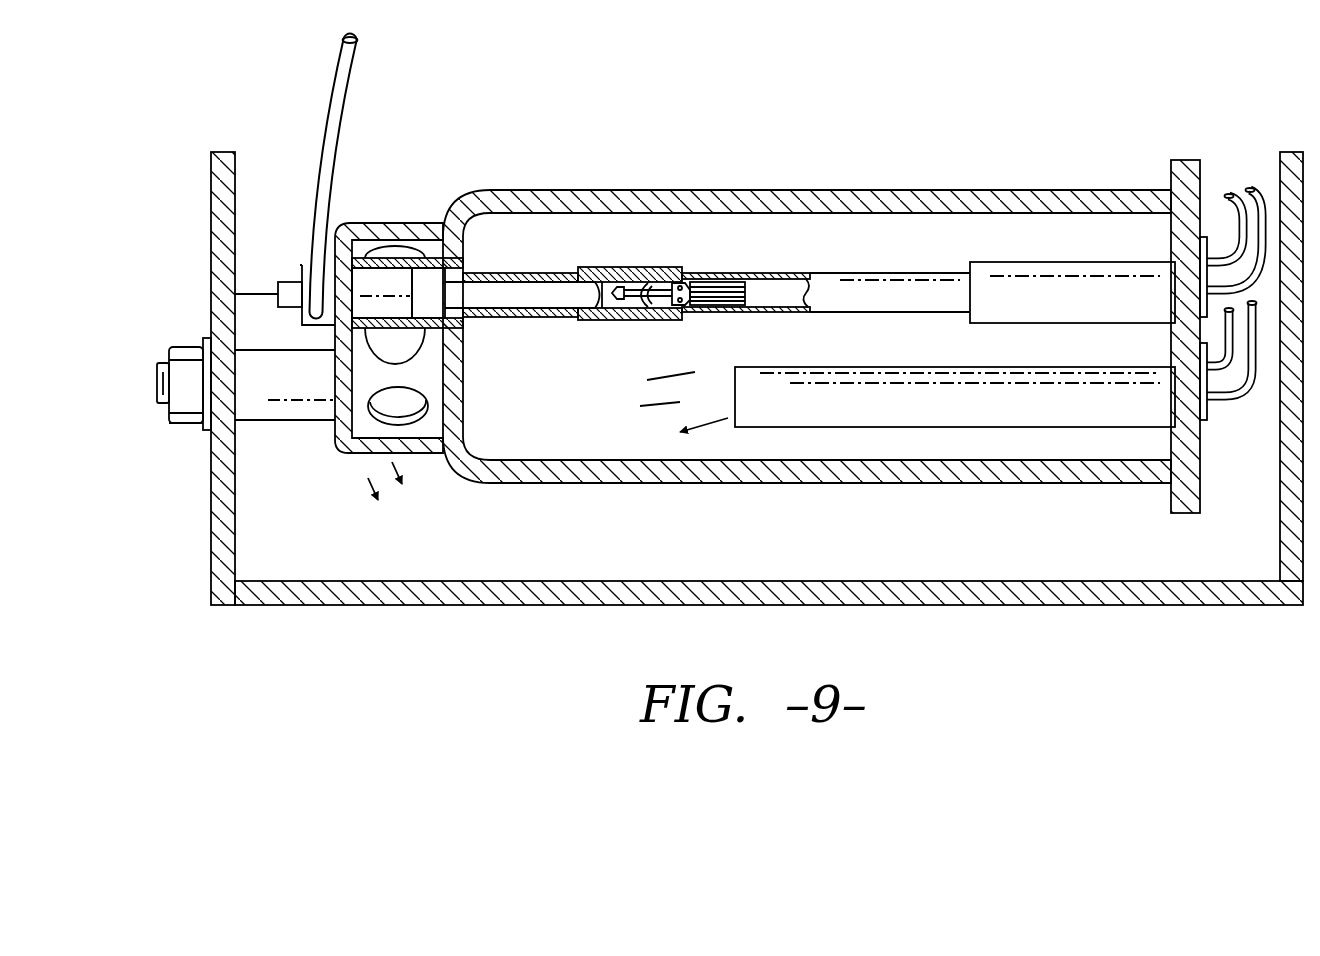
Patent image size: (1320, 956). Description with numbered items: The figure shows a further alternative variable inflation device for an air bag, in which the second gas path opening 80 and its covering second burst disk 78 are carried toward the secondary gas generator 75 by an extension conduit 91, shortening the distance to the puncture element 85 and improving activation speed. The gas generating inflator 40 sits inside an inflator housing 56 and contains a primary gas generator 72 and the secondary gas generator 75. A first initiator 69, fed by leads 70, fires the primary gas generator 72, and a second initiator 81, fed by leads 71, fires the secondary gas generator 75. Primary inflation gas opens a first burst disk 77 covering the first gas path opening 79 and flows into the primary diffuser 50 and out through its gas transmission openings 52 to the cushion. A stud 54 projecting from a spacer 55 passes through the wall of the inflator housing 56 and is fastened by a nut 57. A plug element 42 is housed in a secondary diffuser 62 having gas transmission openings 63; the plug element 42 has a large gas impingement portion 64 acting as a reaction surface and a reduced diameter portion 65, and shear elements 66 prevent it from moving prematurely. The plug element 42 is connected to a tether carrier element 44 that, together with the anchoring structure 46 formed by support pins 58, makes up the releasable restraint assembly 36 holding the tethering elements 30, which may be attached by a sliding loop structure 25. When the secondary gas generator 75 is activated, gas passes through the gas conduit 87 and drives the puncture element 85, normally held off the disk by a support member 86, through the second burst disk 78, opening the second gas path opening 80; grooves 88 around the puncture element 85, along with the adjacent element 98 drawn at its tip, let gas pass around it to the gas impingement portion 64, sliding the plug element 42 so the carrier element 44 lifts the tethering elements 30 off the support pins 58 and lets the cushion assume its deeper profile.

The sliding loop structure 25 is at (312, 300).
The tethering elements 30 is at (357, 60).
The releasable restraint assembly 36 is at (297, 263).
The gas generating inflator 40 is at (1005, 483).
The plug element 42 is at (366, 262).
The tether displacement or carrier element 44 is at (302, 322).
The anchoring structure 46 is at (266, 278).
The primary diffuser 50 is at (342, 443).
The gas transmission openings 52 is at (384, 455).
The stud 54 is at (166, 380).
The spacer 55 is at (270, 420).
The inflator housing 56 is at (945, 605).
The nut 57 is at (182, 424).
The support pins 58 is at (278, 286).
The secondary diffuser 62 is at (482, 367).
The gas transmission openings 63 is at (382, 262).
The gas impingement portion 64 is at (476, 300).
The reduced diameter portion 65 is at (397, 285).
The shear elements 66 is at (405, 250).
The first initiator 69 is at (1205, 420).
The leads 70 is at (1233, 398).
The leads 71 is at (1258, 202).
The primary gas generator 72 is at (822, 428).
The secondary gas generator 75 is at (997, 262).
The first burst disk 77 is at (416, 376).
The second burst disk 78 is at (587, 297).
The first gas path opening 79 is at (463, 386).
The second gas path opening 80 is at (542, 298).
The second initiator 81 is at (1203, 235).
The puncture element 85 is at (740, 320).
The support member 86 is at (642, 287).
The gas conduit 87 is at (863, 273).
The grooves 88 is at (716, 292).
The extension conduit 91 is at (517, 277).
The nozzle 98 is at (673, 306).